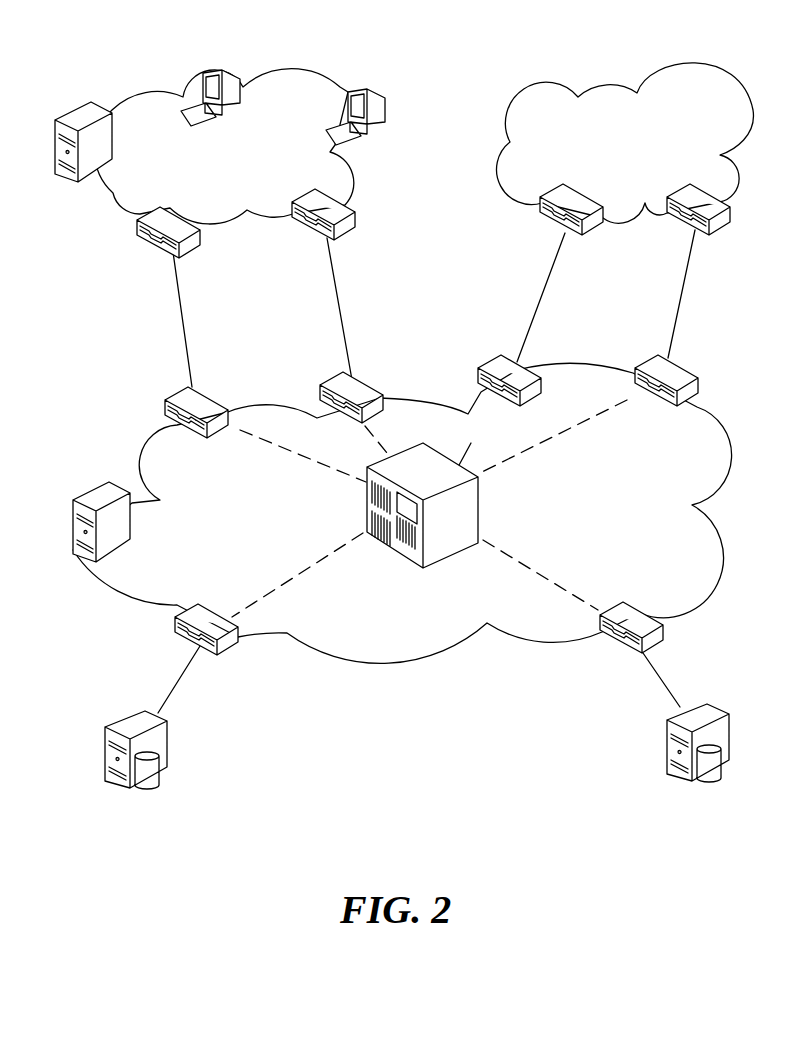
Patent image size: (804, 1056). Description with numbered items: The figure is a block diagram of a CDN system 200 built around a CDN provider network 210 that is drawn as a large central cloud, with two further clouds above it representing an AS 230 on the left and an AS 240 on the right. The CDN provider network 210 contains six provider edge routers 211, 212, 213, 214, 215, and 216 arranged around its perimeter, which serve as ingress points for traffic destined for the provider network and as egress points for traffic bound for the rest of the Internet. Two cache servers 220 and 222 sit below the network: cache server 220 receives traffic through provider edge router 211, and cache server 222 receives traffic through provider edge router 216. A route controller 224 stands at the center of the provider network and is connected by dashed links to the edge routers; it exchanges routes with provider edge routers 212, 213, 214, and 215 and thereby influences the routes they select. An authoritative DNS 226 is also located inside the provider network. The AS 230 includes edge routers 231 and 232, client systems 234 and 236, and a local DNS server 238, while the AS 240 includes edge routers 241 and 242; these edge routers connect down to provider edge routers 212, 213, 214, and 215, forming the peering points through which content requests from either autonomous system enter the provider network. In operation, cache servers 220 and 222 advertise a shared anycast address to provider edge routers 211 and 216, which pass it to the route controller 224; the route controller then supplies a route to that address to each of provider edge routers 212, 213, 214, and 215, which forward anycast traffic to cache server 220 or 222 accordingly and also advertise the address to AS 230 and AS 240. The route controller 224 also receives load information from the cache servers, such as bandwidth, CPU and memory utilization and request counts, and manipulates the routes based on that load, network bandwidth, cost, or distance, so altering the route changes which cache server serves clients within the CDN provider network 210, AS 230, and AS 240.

The CDN system 200 is at (103, 890).
The CDN provider network 210 is at (367, 664).
The provider edge router 211 is at (213, 611).
The provider edge router 212 is at (208, 403).
The provider edge router 213 is at (360, 382).
The provider edge router 214 is at (490, 361).
The provider edge router 215 is at (647, 361).
The provider edge router 216 is at (633, 613).
The cache server 220 is at (132, 714).
The cache server 222 is at (710, 701).
The route controller 224 is at (397, 558).
The authoritative DNS 226 is at (100, 488).
The AS 230 is at (293, 73).
The edge router 231 is at (176, 214).
The edge router 232 is at (300, 190).
The client system 234 is at (210, 70).
The client system 236 is at (367, 88).
The local DNS server 238 is at (78, 104).
The AS 240 is at (546, 92).
The edge router 241 is at (578, 191).
The edge router 242 is at (684, 188).